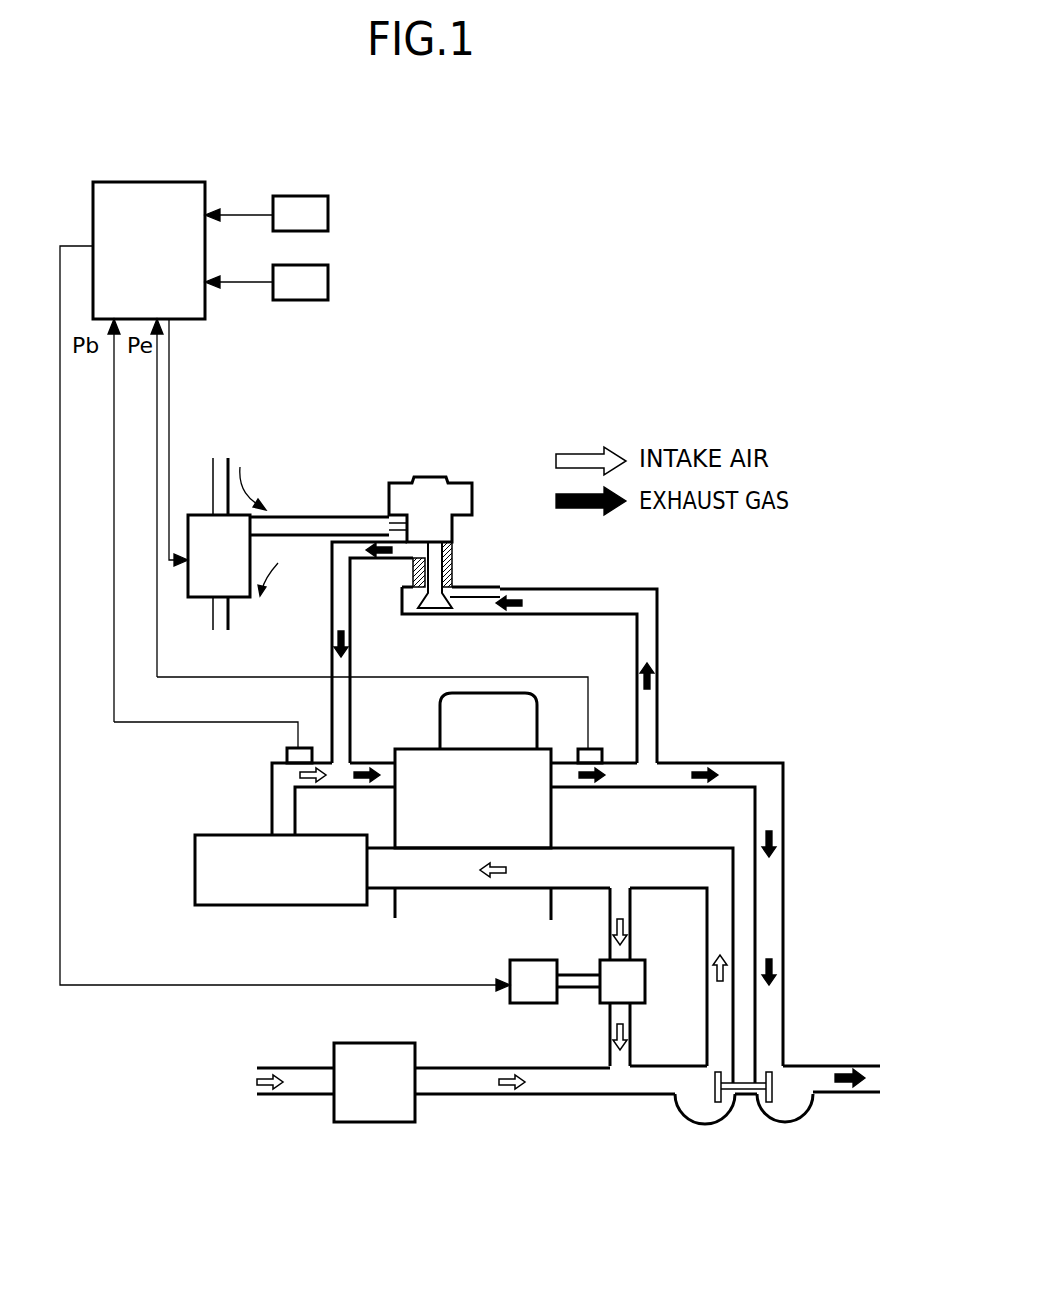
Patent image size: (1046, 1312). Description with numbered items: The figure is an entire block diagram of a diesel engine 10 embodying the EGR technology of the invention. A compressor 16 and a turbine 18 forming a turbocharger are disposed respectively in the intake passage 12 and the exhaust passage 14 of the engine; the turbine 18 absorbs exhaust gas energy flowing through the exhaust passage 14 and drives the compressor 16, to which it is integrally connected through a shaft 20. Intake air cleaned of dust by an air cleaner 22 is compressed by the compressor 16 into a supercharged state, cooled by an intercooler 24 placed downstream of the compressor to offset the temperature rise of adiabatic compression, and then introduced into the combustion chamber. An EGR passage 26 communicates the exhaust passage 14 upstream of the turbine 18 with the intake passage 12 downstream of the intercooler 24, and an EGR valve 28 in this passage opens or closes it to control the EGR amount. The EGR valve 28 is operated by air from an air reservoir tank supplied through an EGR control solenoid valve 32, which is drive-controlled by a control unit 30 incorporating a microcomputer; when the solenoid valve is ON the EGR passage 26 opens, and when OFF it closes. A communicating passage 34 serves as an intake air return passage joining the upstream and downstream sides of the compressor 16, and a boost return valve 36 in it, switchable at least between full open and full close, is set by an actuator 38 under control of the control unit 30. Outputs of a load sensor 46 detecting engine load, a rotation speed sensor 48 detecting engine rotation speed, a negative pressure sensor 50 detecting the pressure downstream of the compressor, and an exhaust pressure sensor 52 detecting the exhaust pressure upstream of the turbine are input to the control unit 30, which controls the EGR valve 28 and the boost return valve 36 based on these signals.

The diesel engine 10 is at (520, 826).
The intake passage 12 is at (560, 1085).
The exhaust passage 14 is at (773, 787).
The compressor 16 is at (708, 1096).
The turbine 18 is at (767, 1095).
The shaft 20 is at (743, 1093).
The air cleaner 22 is at (365, 1123).
The intercooler 24 is at (258, 835).
The EGR passage 26 is at (583, 591).
The EGR valve 28 is at (430, 477).
The control unit 30 is at (160, 182).
The EGR control solenoid valve 32 is at (230, 535).
The communicating passage 34 is at (620, 1012).
The boost return valve 36 is at (628, 982).
The actuator 38 is at (530, 960).
The load sensor 46 is at (298, 196).
The rotation speed sensor 48 is at (330, 280).
The negative pressure sensor 50 is at (290, 752).
The exhaust pressure sensor 52 is at (592, 747).